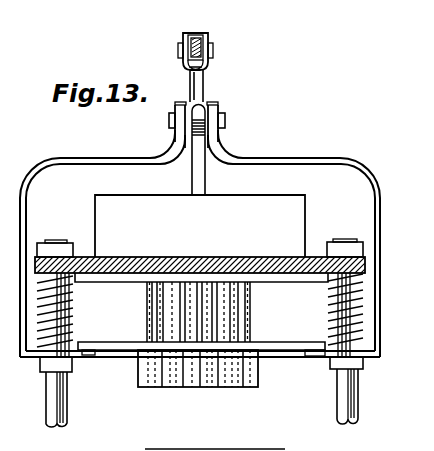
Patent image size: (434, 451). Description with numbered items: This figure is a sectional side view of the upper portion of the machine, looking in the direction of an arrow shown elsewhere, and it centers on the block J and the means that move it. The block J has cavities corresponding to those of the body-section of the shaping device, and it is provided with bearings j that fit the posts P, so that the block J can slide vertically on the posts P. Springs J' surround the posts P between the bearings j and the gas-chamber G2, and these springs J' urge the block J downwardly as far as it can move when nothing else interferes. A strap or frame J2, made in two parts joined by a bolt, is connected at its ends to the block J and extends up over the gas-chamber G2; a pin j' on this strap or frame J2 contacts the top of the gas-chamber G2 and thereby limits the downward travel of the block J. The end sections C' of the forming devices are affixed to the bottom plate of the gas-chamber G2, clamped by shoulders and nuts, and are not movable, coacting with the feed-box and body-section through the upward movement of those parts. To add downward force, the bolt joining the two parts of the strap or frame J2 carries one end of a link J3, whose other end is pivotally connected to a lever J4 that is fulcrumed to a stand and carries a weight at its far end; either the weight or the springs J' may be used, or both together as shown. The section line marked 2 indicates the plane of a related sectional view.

The lever J4 is at (208, 36).
The link J3 is at (205, 87).
The strap or frame J2 is at (372, 181).
The pin j' is at (208, 166).
The gas-chamber G2 is at (200, 226).
The springs J' is at (220, 310).
The end sections C' is at (201, 314).
The block J is at (207, 368).
The bearings j is at (201, 371).
The posts P is at (67, 398).
The section line 2- 2 is at (217, 441).